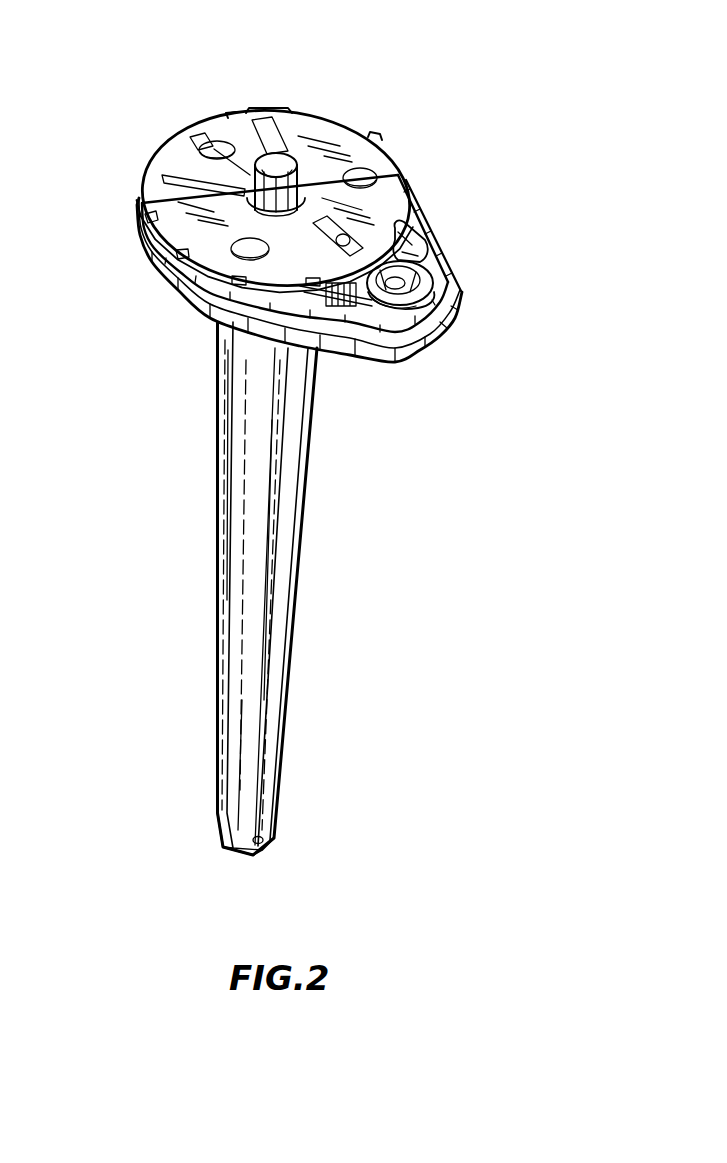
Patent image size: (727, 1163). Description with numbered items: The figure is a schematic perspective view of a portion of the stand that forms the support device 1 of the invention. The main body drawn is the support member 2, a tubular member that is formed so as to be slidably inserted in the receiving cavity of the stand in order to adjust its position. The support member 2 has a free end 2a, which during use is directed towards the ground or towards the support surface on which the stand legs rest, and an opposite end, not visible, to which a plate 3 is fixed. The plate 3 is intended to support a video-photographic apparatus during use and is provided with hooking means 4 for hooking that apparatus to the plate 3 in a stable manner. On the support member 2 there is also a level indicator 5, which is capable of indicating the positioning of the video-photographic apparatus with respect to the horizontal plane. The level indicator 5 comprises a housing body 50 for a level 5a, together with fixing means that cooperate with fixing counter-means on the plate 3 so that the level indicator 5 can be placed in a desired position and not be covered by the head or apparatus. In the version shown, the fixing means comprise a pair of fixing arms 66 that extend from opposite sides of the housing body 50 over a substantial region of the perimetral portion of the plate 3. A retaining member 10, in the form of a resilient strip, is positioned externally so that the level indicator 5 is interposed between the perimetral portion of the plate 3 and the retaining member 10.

The support device 1 is at (133, 448).
The support member 2 is at (287, 633).
The free end 2a is at (237, 851).
The plate 3 is at (365, 155).
The hooking means 4 is at (288, 163).
The level indicator 5 is at (442, 243).
The level 5a is at (432, 310).
The retaining member 10 is at (401, 349).
The housing body 50 is at (436, 271).
The fixing arms 66 is at (426, 234).